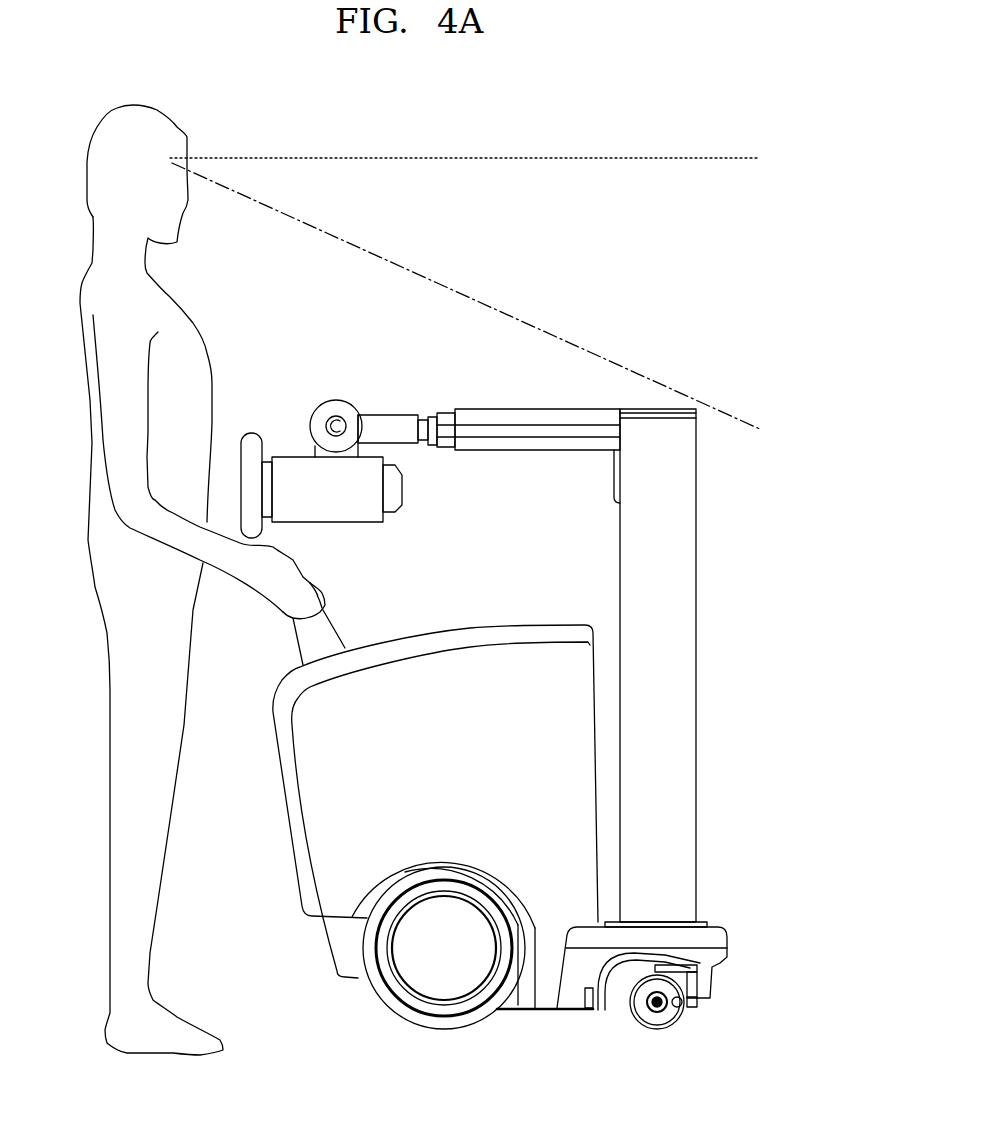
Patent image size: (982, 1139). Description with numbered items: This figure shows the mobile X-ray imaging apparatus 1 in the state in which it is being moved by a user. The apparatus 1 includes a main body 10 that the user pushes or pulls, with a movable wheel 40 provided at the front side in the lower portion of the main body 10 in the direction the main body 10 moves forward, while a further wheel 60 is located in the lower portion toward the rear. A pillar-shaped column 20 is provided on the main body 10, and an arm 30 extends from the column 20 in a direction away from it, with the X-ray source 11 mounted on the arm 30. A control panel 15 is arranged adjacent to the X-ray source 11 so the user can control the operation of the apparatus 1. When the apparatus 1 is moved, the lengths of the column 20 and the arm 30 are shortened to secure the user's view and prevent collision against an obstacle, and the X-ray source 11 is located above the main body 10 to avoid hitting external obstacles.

The mobile X-ray imaging apparatus 1 is at (728, 527).
The main body 10 is at (317, 813).
The X-ray source 11 is at (290, 457).
The control panel 15 is at (244, 433).
The column 20 is at (691, 688).
The arm 30 is at (508, 422).
The movable wheel 40 is at (655, 1030).
The drive wheel 60 is at (441, 1031).